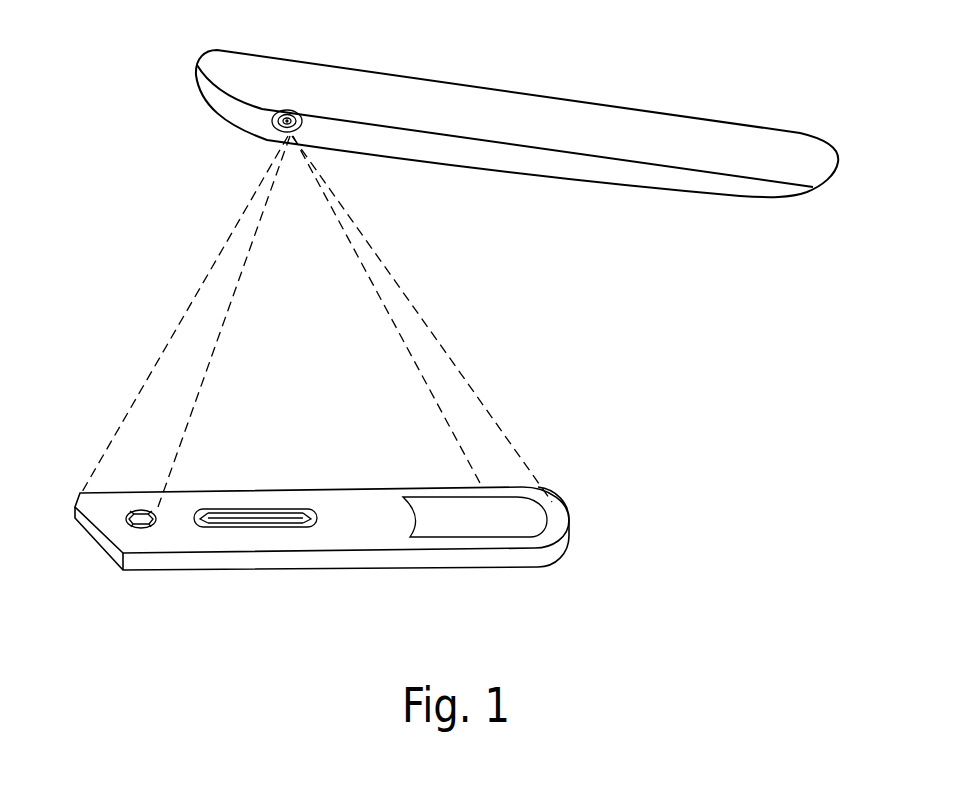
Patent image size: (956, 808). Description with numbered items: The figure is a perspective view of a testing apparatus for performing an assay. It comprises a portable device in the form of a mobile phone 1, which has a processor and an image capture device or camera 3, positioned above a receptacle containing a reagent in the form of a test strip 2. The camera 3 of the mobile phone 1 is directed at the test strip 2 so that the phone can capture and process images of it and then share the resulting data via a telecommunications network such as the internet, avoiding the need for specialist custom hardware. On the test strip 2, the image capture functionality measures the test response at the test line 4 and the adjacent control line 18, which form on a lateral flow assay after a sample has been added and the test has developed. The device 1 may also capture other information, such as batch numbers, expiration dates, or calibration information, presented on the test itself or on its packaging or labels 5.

The mobile phone 1 is at (226, 83).
The test strip 2 is at (99, 508).
The camera 3 is at (294, 128).
The test line 4 is at (231, 511).
The control line 18 is at (285, 511).
The label 5 is at (450, 511).